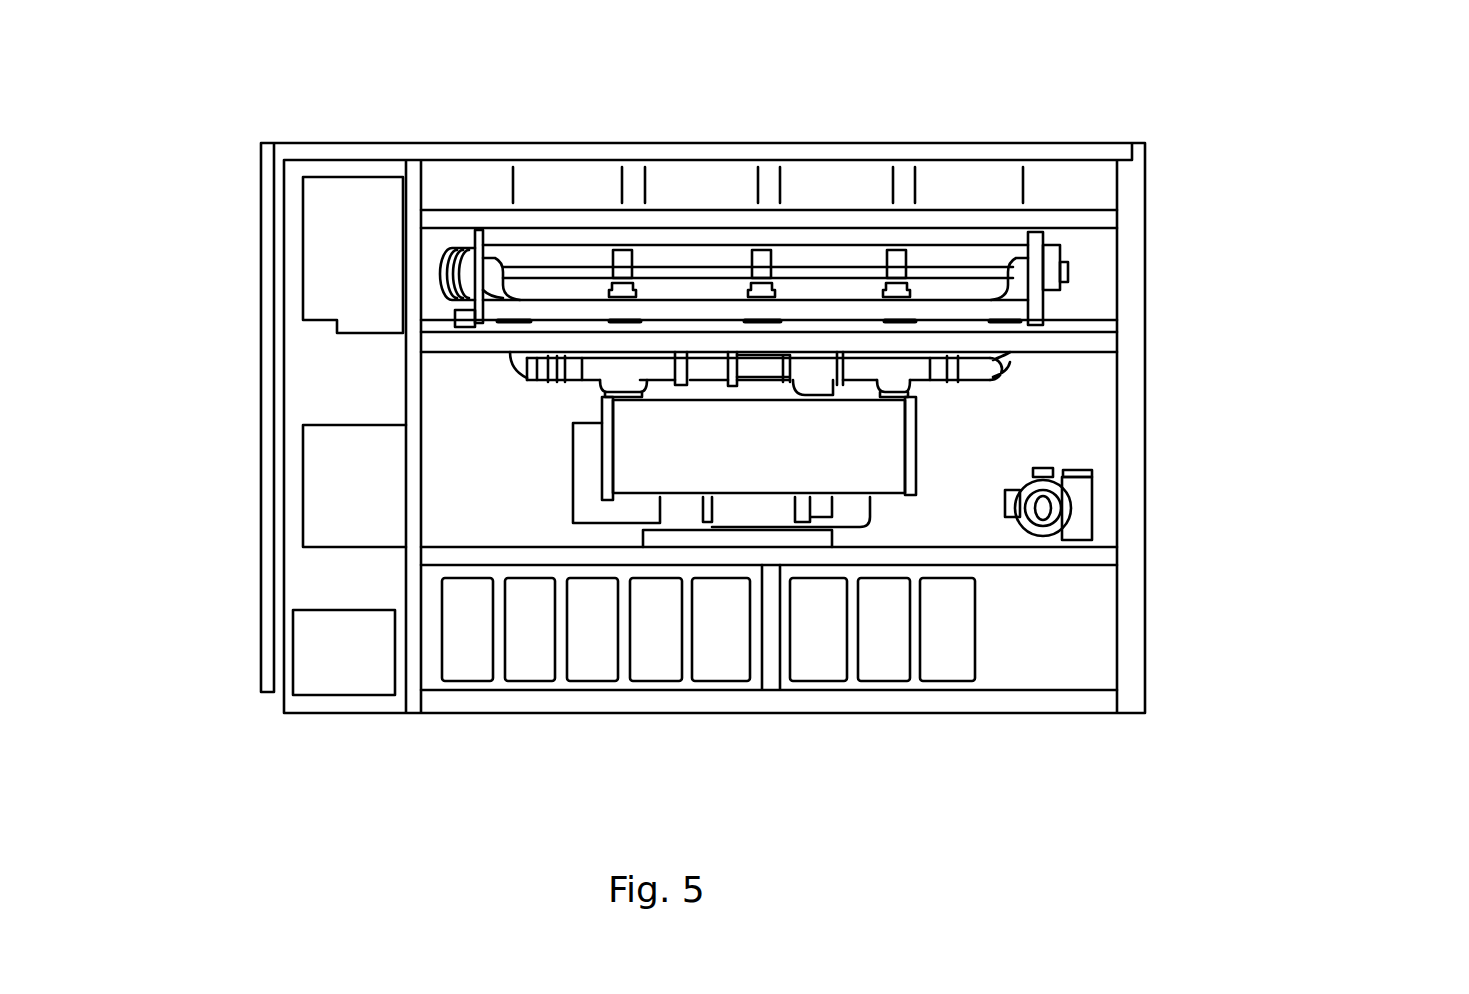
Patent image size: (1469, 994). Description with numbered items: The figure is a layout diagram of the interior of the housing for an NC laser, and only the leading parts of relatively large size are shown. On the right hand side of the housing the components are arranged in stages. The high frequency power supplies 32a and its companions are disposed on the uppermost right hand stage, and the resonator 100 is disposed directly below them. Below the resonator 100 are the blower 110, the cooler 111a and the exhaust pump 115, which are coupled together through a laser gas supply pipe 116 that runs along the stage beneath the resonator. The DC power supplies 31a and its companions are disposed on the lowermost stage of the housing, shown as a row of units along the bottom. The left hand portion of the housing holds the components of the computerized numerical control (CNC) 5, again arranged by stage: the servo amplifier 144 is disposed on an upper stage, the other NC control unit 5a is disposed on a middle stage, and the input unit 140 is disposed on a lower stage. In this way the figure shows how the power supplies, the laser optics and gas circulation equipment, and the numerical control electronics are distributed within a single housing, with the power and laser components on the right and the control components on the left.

The computerized numerical control (CNC) 5 is at (344, 148).
The servo amplifier 144 is at (297, 210).
The NC control unit 5a is at (305, 448).
The input unit 140 is at (293, 638).
The high frequency power supply 32a is at (1060, 172).
The resonator 100 is at (1047, 304).
The laser gas supply pipe 116 is at (993, 376).
The cooler 111a is at (902, 443).
The exhaust pump 115 is at (1078, 518).
The DC power supply 31a is at (946, 667).
The blower 110 is at (573, 423).